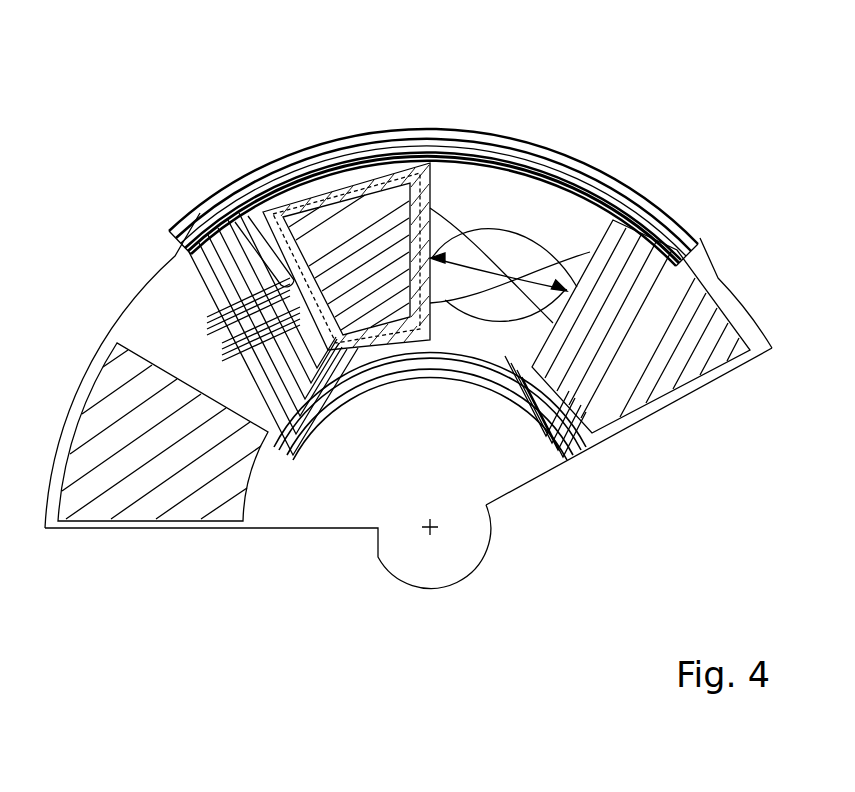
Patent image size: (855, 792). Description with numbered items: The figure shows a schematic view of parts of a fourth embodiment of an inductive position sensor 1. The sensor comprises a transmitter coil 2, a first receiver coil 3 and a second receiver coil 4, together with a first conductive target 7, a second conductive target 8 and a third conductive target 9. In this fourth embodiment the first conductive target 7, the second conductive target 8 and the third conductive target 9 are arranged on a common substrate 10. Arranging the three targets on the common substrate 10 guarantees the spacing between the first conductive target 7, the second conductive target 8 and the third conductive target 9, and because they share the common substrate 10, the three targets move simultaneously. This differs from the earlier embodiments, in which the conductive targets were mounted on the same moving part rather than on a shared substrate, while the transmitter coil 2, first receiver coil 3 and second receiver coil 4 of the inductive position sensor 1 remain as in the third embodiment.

The inductive position sensor 1 is at (97, 632).
The transmitter coil 2 is at (667, 212).
The first receiver coil 3 is at (453, 213).
The second receiver coil 4 is at (513, 217).
The first conductive target 7 is at (659, 315).
The second conductive target 8 is at (347, 217).
The third conductive target 9 is at (180, 487).
The common substrate 10 is at (545, 478).